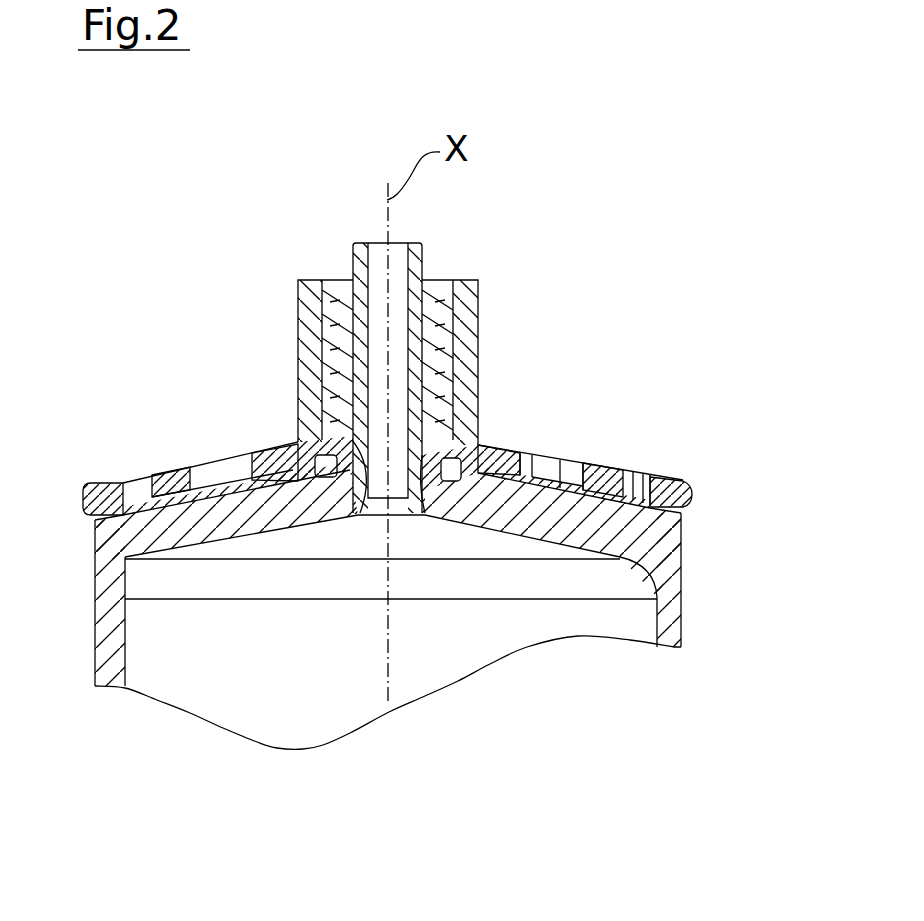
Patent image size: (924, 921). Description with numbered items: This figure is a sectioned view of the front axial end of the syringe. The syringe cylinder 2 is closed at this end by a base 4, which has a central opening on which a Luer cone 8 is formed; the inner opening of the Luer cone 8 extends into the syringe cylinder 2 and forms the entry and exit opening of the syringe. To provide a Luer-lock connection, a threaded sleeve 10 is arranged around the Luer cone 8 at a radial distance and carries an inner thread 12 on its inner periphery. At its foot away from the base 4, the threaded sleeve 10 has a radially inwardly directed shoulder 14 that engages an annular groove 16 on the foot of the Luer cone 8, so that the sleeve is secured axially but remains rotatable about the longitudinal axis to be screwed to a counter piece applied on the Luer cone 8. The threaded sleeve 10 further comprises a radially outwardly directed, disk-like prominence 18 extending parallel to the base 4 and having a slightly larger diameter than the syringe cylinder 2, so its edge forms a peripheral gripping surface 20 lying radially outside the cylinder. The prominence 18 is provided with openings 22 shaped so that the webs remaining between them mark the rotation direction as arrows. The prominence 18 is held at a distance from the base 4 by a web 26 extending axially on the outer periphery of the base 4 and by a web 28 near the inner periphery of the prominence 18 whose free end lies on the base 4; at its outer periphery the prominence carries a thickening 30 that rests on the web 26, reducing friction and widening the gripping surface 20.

The syringe cylinder 2 is at (675, 617).
The base 4 is at (513, 523).
The Luer cone 8 is at (420, 265).
The threaded sleeve 10 is at (480, 318).
The inner thread 12 is at (308, 341).
The shoulder 14 is at (323, 447).
The annular groove 16 is at (363, 510).
The prominence 18 is at (617, 463).
The gripping surface 20 is at (690, 497).
The openings 22 is at (580, 378).
The web 26 is at (663, 517).
The web 28 is at (447, 520).
The thickening 30 is at (675, 487).